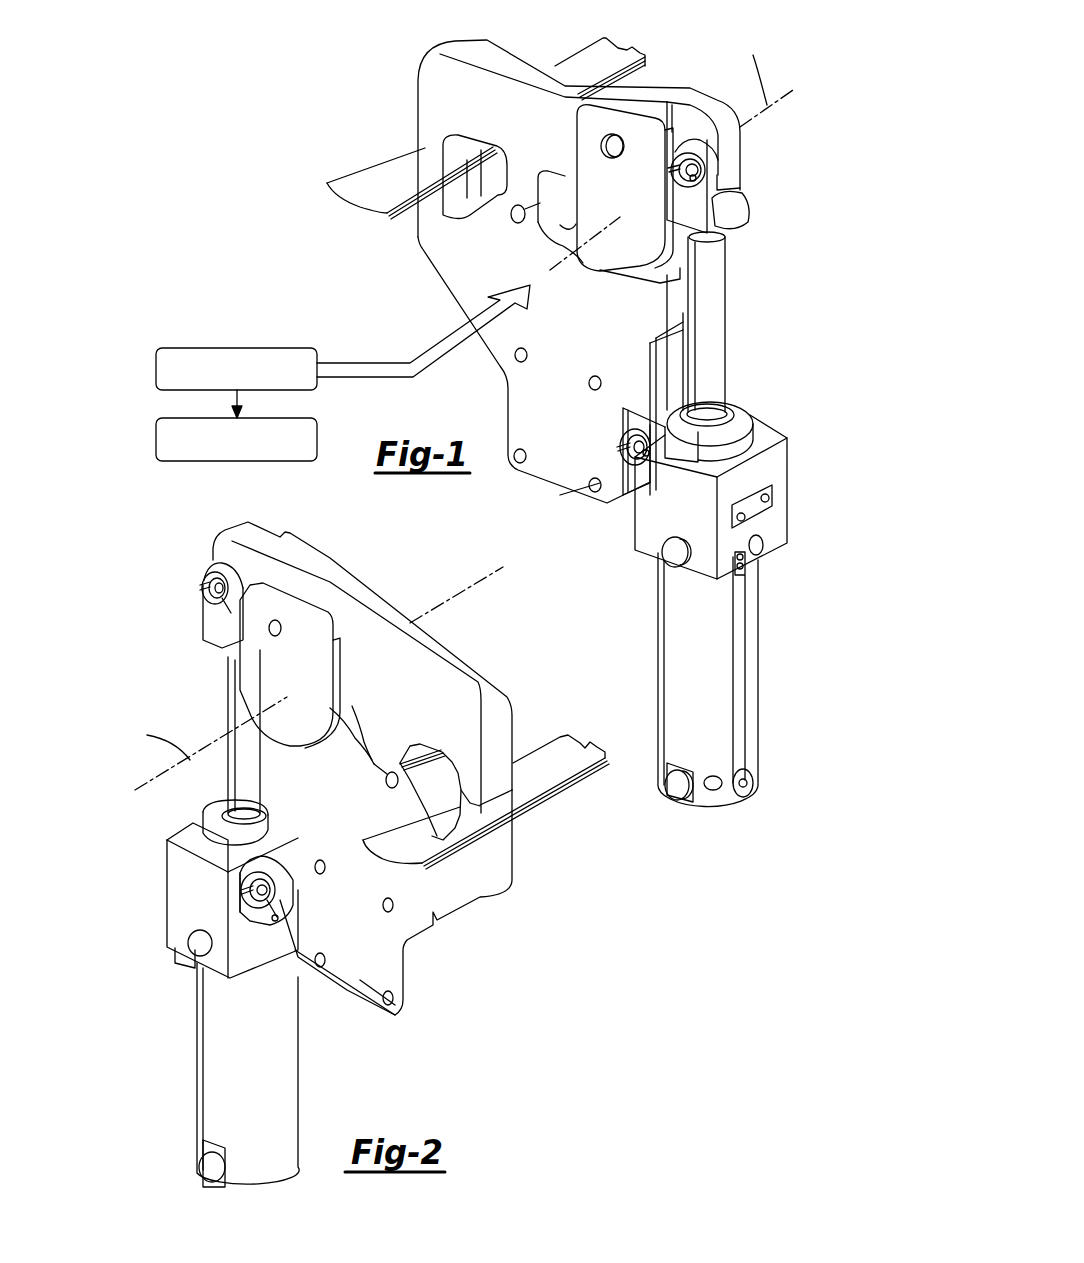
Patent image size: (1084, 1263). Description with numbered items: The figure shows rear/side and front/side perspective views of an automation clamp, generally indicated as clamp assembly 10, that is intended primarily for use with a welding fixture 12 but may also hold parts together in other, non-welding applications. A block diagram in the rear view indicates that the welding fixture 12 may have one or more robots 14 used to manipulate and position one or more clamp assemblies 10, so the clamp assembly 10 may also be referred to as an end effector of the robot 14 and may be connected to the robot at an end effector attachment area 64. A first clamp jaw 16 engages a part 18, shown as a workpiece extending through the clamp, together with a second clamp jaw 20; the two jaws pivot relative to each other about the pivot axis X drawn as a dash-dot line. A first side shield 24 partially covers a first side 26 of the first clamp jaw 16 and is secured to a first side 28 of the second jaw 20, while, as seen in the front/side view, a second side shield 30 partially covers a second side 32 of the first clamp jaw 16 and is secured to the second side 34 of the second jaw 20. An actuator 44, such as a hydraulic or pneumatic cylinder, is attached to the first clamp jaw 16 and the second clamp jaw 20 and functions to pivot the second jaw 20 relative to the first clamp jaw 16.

In FIG. 1, the clamp assembly 10 is at (779, 264).
In FIG. 2, the clamp assembly 10 is at (545, 898).
In FIG. 1, the welding fixture 12 is at (156, 436).
In FIG. 1, the robot 14 is at (253, 348).
In FIG. 1, the first clamp jaw 16 is at (455, 250).
In FIG. 2, the first clamp jaw 16 is at (397, 922).
In FIG. 1, the part 18 is at (397, 170).
In FIG. 2, the part 18 is at (545, 770).
In FIG. 1, the second clamp jaw 20 is at (560, 267).
In FIG. 2, the second clamp jaw 20 is at (356, 675).
In FIG. 1, the first side shield 24 is at (605, 238).
In FIG. 1, the first side of the first clamp jaw 26 is at (646, 385).
In FIG. 1, the first side of the second jaw 28 is at (481, 158).
In FIG. 2, the second side shield 30 is at (258, 655).
In FIG. 2, the second side of the first clamp jaw 32 is at (354, 898).
In FIG. 2, the second side of the second jaw 34 is at (405, 760).
In FIG. 1, the actuator 44 is at (702, 604).
In FIG. 2, the actuator 44 is at (233, 993).
In FIG. 1, the end effector attachment area 64 is at (585, 472).
In FIG. 2, the end effector attachment area 64 is at (363, 975).